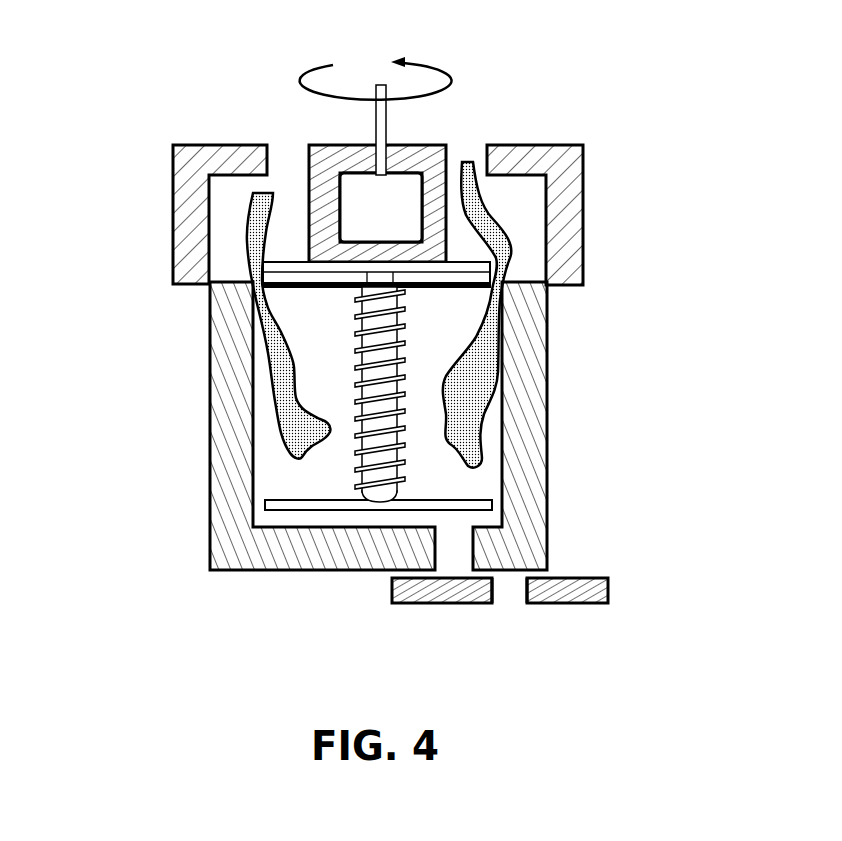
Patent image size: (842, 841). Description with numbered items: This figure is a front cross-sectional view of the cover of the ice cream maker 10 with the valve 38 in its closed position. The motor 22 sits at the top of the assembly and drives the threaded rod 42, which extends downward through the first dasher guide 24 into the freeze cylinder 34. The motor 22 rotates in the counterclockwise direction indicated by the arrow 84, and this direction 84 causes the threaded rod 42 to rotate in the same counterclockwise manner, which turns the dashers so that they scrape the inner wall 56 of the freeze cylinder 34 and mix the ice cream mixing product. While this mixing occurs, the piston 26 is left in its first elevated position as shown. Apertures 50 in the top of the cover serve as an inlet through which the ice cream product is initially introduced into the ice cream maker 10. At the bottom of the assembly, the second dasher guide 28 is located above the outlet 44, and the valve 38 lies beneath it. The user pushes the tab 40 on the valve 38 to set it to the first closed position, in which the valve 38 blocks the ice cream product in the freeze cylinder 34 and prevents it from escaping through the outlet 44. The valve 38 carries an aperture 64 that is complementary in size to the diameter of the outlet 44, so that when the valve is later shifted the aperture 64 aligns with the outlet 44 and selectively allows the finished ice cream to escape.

The ice cream maker 10 is at (632, 163).
The motor 22 is at (363, 198).
The first dasher guide 24 is at (273, 263).
The piston 26 is at (320, 288).
The second dasher guide 28 is at (317, 512).
The freeze cylinder 34 is at (325, 368).
The valve 38 is at (448, 552).
The tab 40 is at (608, 590).
The threaded rod 42 is at (363, 457).
The outlet 44 is at (392, 597).
The apertures 50 is at (467, 150).
The inner wall 56 is at (503, 402).
The aperture 64 is at (509, 595).
The arrow 84 is at (310, 72).